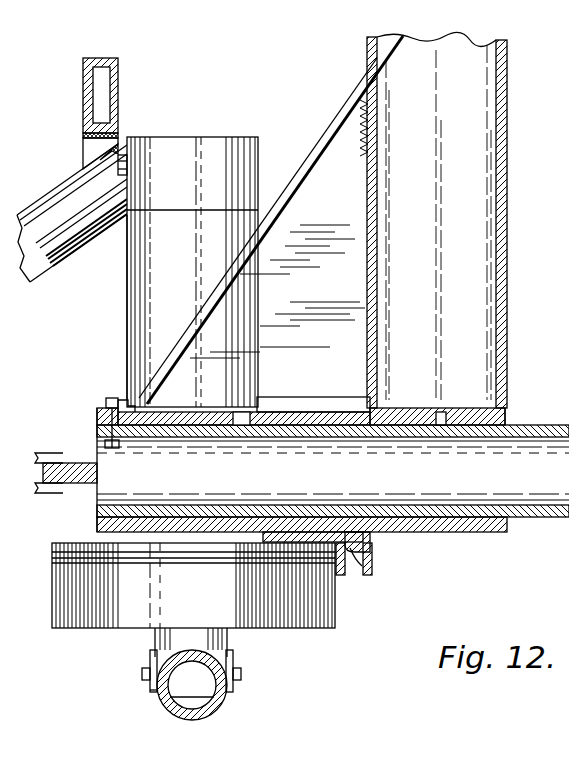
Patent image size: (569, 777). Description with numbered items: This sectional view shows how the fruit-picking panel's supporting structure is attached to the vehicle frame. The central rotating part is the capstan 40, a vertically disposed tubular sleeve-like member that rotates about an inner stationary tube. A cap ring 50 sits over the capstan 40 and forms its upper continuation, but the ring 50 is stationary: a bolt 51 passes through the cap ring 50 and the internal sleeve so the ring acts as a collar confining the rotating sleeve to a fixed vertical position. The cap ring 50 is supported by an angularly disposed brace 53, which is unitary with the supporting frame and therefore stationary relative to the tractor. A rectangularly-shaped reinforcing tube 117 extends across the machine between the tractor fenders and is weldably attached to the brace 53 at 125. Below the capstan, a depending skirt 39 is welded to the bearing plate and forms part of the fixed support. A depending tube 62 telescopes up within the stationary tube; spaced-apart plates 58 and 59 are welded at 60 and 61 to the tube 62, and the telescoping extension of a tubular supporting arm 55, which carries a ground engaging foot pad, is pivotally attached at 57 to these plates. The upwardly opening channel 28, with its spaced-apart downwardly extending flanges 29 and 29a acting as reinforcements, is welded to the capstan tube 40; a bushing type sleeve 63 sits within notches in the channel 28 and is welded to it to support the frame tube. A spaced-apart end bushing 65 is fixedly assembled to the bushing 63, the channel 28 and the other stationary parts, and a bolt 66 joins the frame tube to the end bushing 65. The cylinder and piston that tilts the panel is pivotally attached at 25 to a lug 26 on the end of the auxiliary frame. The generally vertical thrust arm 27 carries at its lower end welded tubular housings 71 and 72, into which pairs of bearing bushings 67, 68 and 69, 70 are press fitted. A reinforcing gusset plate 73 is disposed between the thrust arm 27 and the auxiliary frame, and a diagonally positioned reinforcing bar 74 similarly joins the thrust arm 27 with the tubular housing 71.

The rectangularly-shaped reinforcing tube 117 is at (118, 70).
The weld attachment 125 is at (85, 135).
The angularly disposed brace 53 is at (46, 199).
The bolt 51 is at (120, 180).
The cap ring 50 is at (193, 140).
The capstan 40 is at (127, 291).
The reinforcing gusset plate 73 is at (342, 153).
The diagonally positioned reinforcing bar 74 is at (290, 188).
The thrust arm 27 is at (507, 215).
The bolt 66 is at (107, 399).
The bearing bushing 67 is at (160, 410).
The tubular housing 71 is at (232, 412).
The bearing bushing 68 is at (258, 400).
The bearing bushing 69 is at (410, 415).
The tubular housing 72 is at (441, 410).
The bearing bushing 70 is at (507, 410).
The pivotal attachment 25 is at (45, 455).
The lug 26 is at (77, 463).
The end bushing 65 is at (100, 523).
The upwardly opening channel 28 is at (366, 549).
The bushing type sleeve 63 is at (352, 562).
The downwardly extending flange 29 is at (372, 571).
The downwardly extending flange 29a is at (341, 576).
The depending skirt 39 is at (310, 628).
The depending tube 62 is at (185, 640).
The tubular supporting arm 55 is at (215, 712).
The weld 60 is at (150, 650).
The weld 61 is at (233, 652).
The pivotal attachment 57 is at (142, 674).
The plate 58 is at (147, 692).
The plate 59 is at (241, 690).